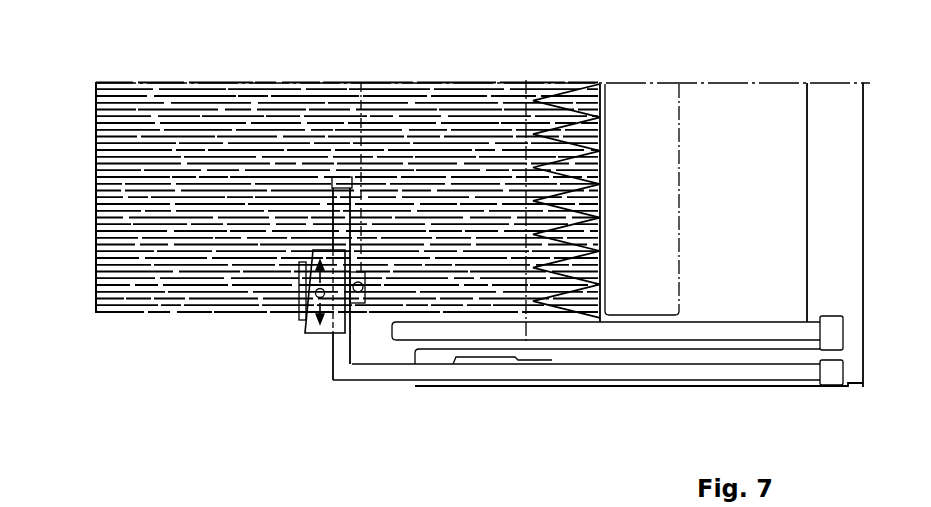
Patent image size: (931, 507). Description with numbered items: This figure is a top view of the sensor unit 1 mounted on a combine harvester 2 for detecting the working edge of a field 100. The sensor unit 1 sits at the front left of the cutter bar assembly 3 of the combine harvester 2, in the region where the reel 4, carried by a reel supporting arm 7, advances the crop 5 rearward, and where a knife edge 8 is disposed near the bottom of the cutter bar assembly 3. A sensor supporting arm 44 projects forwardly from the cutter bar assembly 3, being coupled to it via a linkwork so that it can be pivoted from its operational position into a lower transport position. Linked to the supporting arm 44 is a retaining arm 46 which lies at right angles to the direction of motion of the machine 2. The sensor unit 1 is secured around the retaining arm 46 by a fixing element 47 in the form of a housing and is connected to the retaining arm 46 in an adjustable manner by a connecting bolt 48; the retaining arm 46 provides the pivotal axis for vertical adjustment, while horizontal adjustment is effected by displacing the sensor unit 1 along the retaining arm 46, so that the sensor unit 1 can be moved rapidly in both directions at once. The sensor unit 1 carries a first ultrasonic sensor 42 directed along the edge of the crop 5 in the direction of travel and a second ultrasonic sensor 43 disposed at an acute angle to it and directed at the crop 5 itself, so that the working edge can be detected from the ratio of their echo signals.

The field 100 is at (231, 72).
The sensor unit 1 is at (297, 372).
The combine harvester 2 is at (890, 362).
The cutter bar assembly 3 is at (729, 93).
The reel 4 is at (682, 108).
The crop 5 is at (418, 103).
The reel supporting arm 7 is at (633, 338).
The knife edge 8 is at (577, 95).
The first ultrasonic sensor 42 is at (298, 312).
The second ultrasonic sensor 43 is at (297, 272).
The sensor supporting arm 44 is at (516, 368).
The retaining arm 46 is at (336, 176).
The fixing element 47 is at (357, 305).
The connecting bolt 48 is at (366, 304).